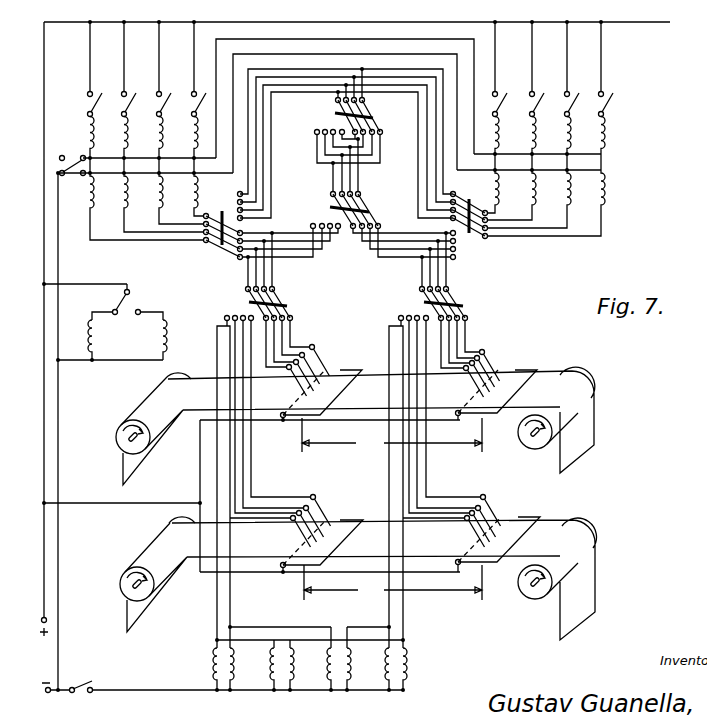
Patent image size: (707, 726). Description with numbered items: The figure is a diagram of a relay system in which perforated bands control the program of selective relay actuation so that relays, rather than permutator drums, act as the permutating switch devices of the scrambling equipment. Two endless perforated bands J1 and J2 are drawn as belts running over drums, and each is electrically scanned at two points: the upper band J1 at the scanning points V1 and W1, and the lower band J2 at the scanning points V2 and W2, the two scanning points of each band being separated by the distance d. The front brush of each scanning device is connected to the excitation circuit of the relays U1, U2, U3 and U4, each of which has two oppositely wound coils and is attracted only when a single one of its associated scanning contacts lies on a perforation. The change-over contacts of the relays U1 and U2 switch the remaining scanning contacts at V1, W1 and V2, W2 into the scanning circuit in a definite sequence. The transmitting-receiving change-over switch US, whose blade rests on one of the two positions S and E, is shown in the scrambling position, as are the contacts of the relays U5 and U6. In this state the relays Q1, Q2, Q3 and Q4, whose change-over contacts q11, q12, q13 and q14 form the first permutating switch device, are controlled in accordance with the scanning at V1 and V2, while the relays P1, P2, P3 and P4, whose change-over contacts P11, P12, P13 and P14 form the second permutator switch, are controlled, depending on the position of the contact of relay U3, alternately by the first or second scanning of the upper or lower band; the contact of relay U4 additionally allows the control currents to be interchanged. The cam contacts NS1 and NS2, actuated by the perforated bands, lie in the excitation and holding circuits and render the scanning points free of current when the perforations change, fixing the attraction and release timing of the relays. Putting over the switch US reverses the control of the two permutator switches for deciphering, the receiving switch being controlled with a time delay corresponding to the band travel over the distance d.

The change-over contact q11 is at (82, 90).
The change-over contact q12 is at (117, 90).
The change-over contact q13 is at (152, 90).
The change-over contact q14 is at (186, 90).
The relay Q1 is at (146, 199).
The relay Q2 is at (163, 195).
The relay Q3 is at (181, 191).
The relay Q4 is at (204, 187).
The change-over contact P11 is at (615, 88).
The change-over contact P12 is at (581, 88).
The change-over contact P13 is at (546, 88).
The change-over contact P14 is at (510, 88).
The relay P1 is at (553, 195).
The relay P2 is at (536, 191).
The relay P3 is at (519, 187).
The relay P4 is at (500, 183).
The cam contact NS1 is at (225, 412).
The cam contact NS2 is at (72, 178).
The transmitting-receiving change-over switch US is at (114, 287).
The switch contact S is at (105, 306).
The switch contact E is at (150, 305).
The relay U5 is at (278, 276).
The relay U6 is at (203, 276).
The relay U1 is at (262, 461).
The relay U2 is at (433, 461).
The relay U3 is at (347, 441).
The relay U4 is at (349, 379).
The scanning point V1 is at (320, 362).
The scanning point W1 is at (492, 362).
The scanning point V2 is at (321, 511).
The scanning point W2 is at (493, 511).
The endless perforated band J1 is at (374, 372).
The endless perforated band J2 is at (376, 518).
The distance between scanning points d is at (392, 509).